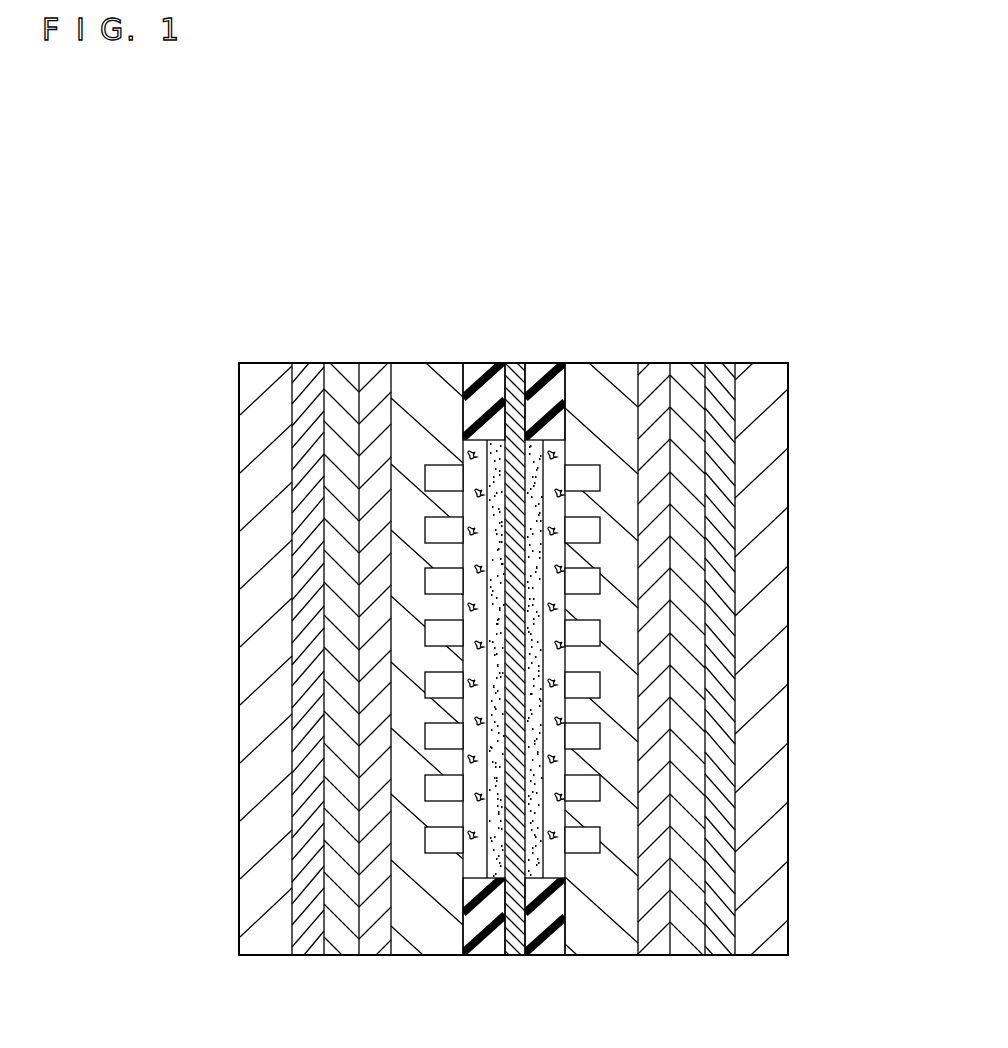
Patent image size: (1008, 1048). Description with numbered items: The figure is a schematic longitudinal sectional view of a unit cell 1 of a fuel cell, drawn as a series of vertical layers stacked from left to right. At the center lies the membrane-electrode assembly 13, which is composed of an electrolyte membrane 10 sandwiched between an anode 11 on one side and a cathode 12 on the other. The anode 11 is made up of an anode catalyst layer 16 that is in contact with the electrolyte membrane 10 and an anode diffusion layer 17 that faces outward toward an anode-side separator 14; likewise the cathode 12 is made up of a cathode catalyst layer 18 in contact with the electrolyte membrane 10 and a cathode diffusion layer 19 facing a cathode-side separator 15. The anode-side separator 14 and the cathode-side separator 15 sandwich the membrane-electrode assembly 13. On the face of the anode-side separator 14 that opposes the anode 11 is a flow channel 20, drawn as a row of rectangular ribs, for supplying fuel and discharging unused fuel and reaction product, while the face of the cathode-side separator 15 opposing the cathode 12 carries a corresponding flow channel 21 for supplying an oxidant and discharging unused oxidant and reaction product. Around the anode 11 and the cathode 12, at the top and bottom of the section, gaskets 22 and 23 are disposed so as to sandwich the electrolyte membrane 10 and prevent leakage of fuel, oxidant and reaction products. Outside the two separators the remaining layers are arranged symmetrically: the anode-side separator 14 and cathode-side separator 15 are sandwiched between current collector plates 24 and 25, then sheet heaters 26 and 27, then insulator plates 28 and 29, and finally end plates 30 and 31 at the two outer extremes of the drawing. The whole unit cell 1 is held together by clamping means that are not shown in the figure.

The unit cell 1 is at (700, 166).
The electrolyte membrane 10 is at (515, 395).
The anode 11 is at (457, 557).
The cathode 12 is at (580, 595).
The membrane-electrode assembly 13 is at (521, 563).
The anode-side separator 14 is at (418, 392).
The cathode-side separator 15 is at (618, 400).
The anode catalyst layer 16 is at (497, 412).
The anode diffusion layer 17 is at (464, 413).
The cathode catalyst layer 18 is at (545, 418).
The cathode diffusion layer 19 is at (553, 410).
The flow channel 20 is at (442, 843).
The flow channel 21 is at (585, 842).
The gasket 22 is at (485, 915).
The gasket 23 is at (543, 922).
The current collector plate 24 is at (375, 438).
The current collector plate 25 is at (655, 442).
The sheet heater 26 is at (345, 524).
The sheet heater 27 is at (690, 525).
The insulator plate 28 is at (305, 596).
The insulator plate 29 is at (720, 595).
The end plate 30 is at (265, 667).
The end plate 31 is at (760, 677).